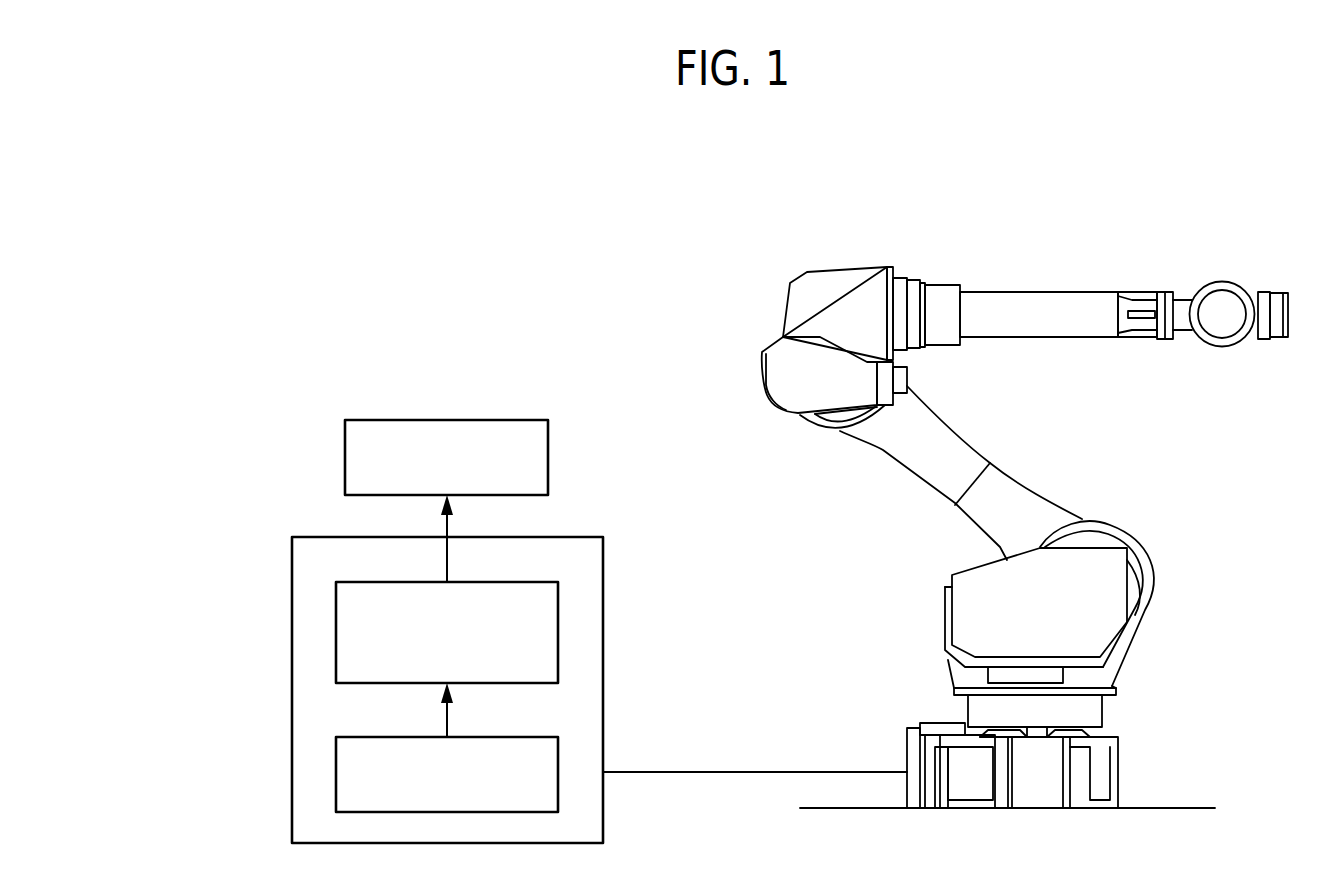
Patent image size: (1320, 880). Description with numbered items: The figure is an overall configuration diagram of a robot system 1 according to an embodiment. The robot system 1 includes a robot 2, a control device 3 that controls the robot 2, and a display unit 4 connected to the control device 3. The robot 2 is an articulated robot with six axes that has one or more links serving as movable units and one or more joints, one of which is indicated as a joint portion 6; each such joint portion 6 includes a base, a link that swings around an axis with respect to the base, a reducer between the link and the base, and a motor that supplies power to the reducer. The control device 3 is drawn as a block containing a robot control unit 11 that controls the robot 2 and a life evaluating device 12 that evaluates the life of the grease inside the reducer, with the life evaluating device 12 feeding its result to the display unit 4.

The robot system 1 is at (516, 190).
The robot 2 is at (921, 242).
The control device 3 is at (603, 603).
The display unit 4 is at (445, 420).
The joint portion 6 is at (1150, 516).
The robot control unit 11 is at (336, 768).
The life evaluating device 12 is at (336, 622).